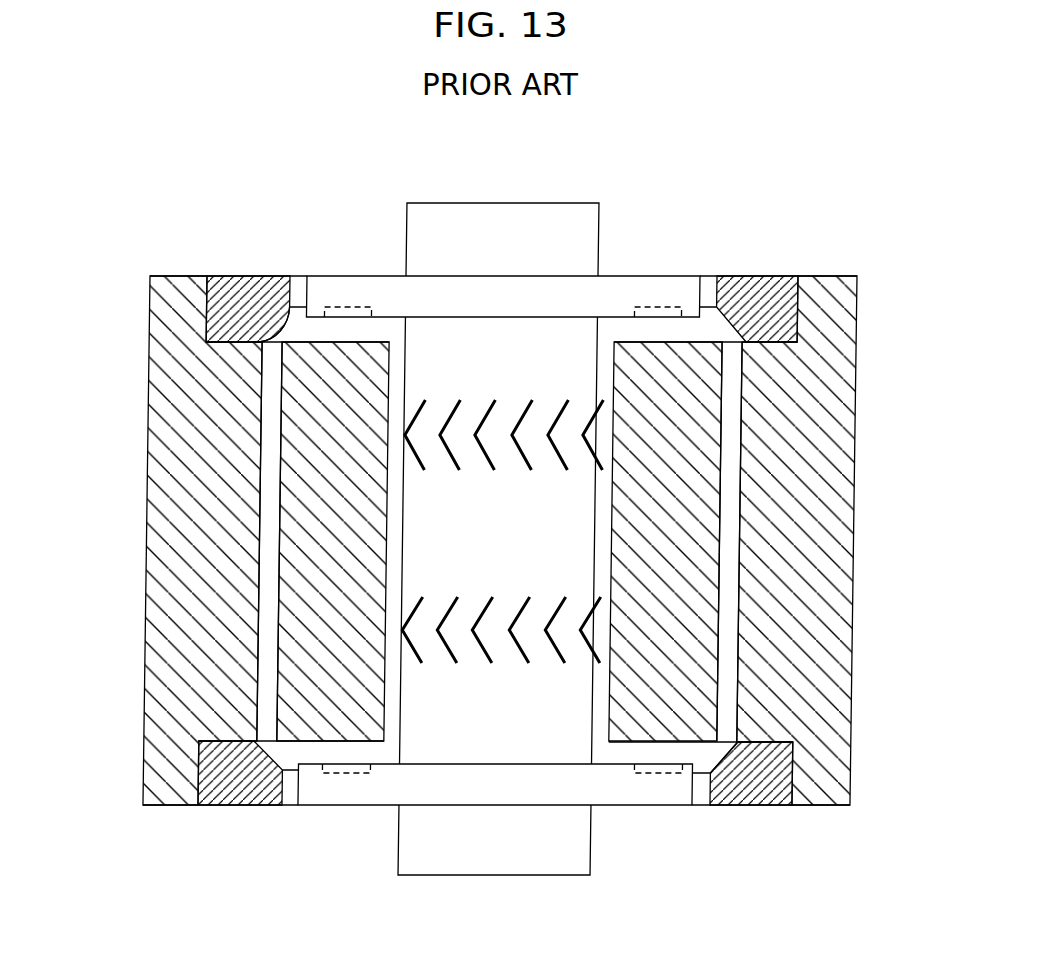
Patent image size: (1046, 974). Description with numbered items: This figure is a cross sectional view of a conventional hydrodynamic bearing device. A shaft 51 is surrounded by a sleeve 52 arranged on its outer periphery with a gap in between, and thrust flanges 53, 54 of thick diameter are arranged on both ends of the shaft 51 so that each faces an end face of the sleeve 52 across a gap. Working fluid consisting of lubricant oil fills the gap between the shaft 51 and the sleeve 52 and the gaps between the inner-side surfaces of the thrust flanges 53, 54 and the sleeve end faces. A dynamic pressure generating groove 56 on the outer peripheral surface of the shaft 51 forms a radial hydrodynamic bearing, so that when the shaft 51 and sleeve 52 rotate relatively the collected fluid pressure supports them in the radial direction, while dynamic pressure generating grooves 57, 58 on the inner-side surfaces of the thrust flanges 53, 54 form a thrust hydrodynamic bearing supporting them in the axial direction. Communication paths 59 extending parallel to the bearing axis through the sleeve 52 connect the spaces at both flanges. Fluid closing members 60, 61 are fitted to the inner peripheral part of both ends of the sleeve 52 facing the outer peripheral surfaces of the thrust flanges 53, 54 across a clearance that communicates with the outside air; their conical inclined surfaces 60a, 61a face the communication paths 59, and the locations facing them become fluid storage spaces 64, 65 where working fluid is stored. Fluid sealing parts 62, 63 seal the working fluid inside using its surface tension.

The shaft 51 is at (453, 860).
The sleeve 52 is at (176, 678).
The thrust flange 53 is at (628, 288).
The thrust flange 54 is at (619, 797).
The dynamic pressure generating groove 56 is at (596, 425).
The dynamic pressure generating groove 57 is at (345, 307).
The dynamic pressure generating groove 58 is at (347, 773).
The communication path 59 is at (272, 454).
The fluid closing member 60 is at (228, 290).
The inclined surface 60a is at (271, 344).
The fluid closing member 61 is at (779, 795).
The inclined surface 61a is at (733, 748).
The fluid sealing part 62 is at (302, 282).
The fluid sealing part 63 is at (707, 795).
The fluid storage space 64 is at (278, 293).
The fluid storage space 65 is at (730, 783).